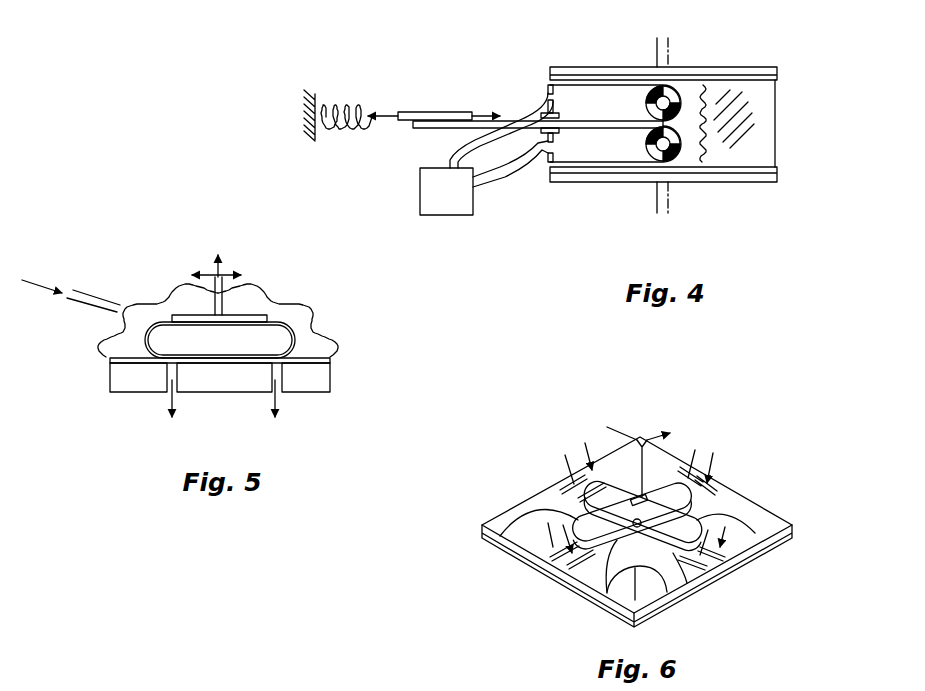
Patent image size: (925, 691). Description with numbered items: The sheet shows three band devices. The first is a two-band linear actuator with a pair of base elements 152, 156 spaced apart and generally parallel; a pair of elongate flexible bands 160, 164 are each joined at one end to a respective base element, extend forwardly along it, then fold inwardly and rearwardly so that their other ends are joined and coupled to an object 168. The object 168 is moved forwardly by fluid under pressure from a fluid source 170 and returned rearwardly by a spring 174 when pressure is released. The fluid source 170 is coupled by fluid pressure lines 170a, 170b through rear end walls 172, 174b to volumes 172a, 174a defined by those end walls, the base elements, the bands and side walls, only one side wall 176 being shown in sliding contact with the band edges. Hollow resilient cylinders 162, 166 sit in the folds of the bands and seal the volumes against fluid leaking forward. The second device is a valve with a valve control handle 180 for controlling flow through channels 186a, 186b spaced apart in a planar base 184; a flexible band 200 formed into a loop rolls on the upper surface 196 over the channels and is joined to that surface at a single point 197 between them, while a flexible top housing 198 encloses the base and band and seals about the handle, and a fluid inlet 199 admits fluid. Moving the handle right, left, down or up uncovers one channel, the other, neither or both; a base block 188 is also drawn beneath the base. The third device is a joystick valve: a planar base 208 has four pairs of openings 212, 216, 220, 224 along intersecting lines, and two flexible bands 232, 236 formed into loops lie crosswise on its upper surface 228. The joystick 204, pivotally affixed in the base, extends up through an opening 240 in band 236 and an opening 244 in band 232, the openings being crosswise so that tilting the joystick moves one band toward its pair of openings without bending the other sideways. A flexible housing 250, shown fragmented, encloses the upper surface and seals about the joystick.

In FIG. 4, the base element 152 is at (757, 81).
In FIG. 4, the base element 156 is at (750, 158).
In FIG. 4, the flexible band 160 is at (686, 97).
In FIG. 4, the hollow resilient cylinder 162 is at (650, 98).
In FIG. 4, the flexible band 164 is at (679, 151).
In FIG. 4, the hollow resilient cylinder 166 is at (650, 148).
In FIG. 4, the object 168 is at (426, 111).
In FIG. 4, the fluid source 170 is at (438, 217).
In FIG. 4, the fluid pressure line 170a is at (447, 142).
In FIG. 4, the fluid pressure line 170b is at (492, 176).
In FIG. 4, the rear end wall 172 is at (544, 90).
In FIG. 4, the volume 172a is at (568, 98).
In FIG. 4, the spring 174 is at (347, 100).
In FIG. 4, the volume 174a is at (582, 150).
In FIG. 4, the rear end wall 174b is at (540, 164).
In FIG. 4, the side wall 176 is at (752, 164).
In FIG. 5, the valve control handle 180 is at (227, 297).
In FIG. 5, the planar base 184 is at (320, 378).
In FIG. 5, the channel 186a is at (178, 394).
In FIG. 5, the channel 186b is at (273, 397).
In FIG. 5, the base block 188 is at (146, 393).
In FIG. 5, the upper surface 196 is at (104, 345).
In FIG. 5, the single point 197 is at (220, 359).
In FIG. 6, the single point 197 is at (620, 590).
In FIG. 5, the flexible top housing 198 is at (138, 293).
In FIG. 5, the fluid inlet 199 is at (82, 290).
In FIG. 5, the flexible band 200 is at (298, 338).
In FIG. 6, the joystick 204 is at (643, 458).
In FIG. 6, the planar base 208 is at (740, 510).
In FIG. 6, the openings 212 is at (723, 463).
In FIG. 6, the openings 216 is at (555, 470).
In FIG. 6, the openings 220 is at (545, 575).
In FIG. 6, the openings 224 is at (718, 585).
In FIG. 6, the upper surface 228 is at (767, 552).
In FIG. 6, the flexible band 232 is at (663, 543).
In FIG. 6, the flexible band 236 is at (497, 537).
In FIG. 6, the opening 240 is at (790, 537).
In FIG. 6, the opening 244 is at (553, 511).
In FIG. 6, the flexible housing 250 is at (617, 545).